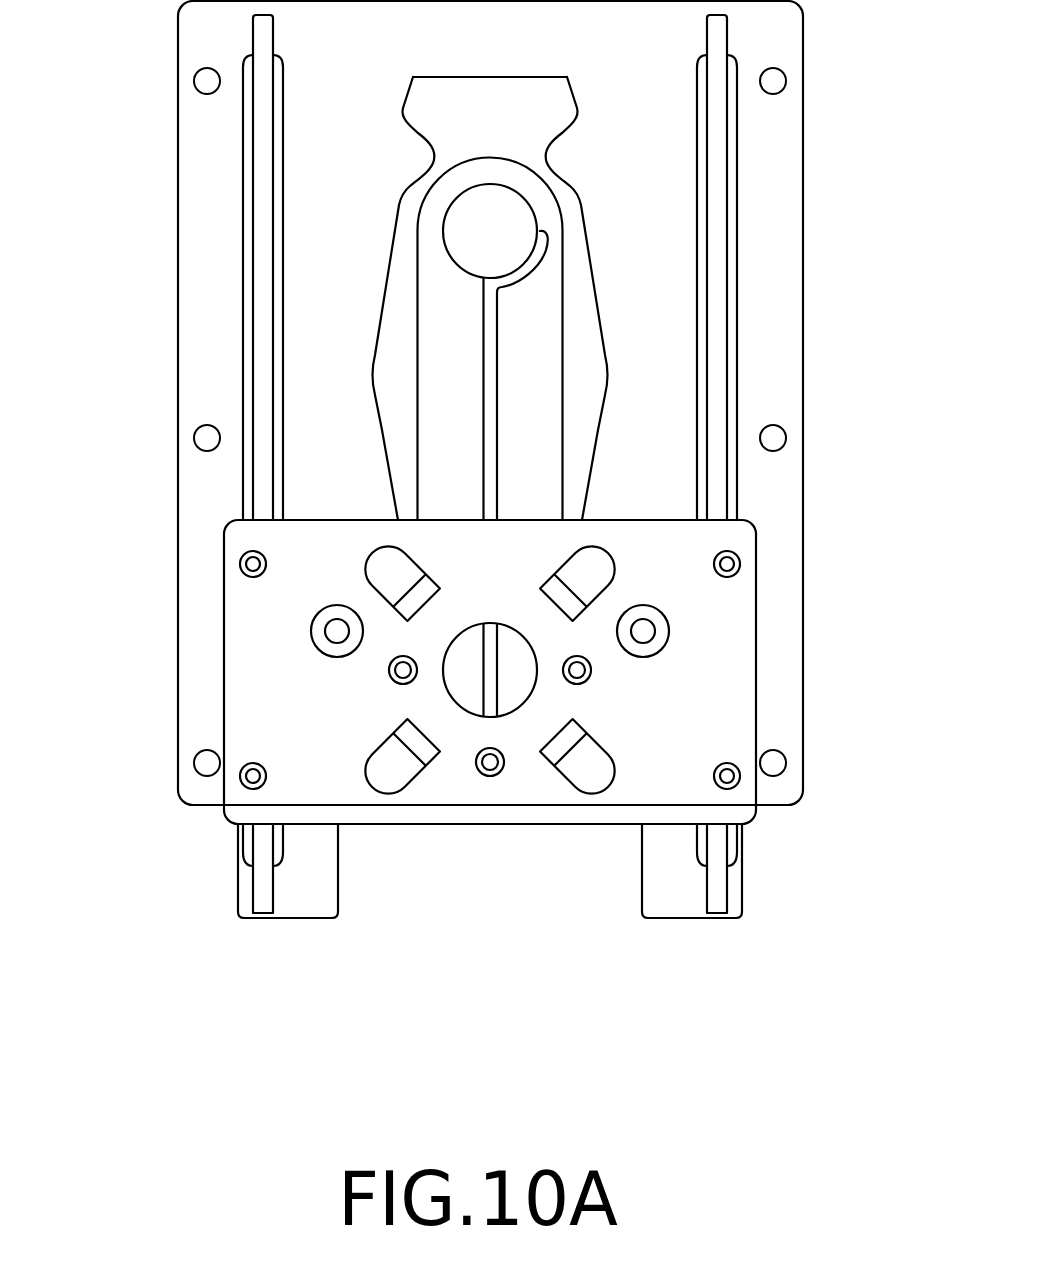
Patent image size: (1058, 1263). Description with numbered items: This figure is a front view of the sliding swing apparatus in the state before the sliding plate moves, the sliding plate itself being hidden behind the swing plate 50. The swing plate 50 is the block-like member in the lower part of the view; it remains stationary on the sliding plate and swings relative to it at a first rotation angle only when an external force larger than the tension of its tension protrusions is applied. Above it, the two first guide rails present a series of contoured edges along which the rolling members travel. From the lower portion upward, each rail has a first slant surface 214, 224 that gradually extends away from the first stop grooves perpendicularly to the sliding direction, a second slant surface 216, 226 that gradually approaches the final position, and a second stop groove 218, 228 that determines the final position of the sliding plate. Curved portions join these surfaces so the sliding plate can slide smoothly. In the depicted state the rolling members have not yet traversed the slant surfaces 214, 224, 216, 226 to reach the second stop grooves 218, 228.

The swing plate 50 is at (775, 620).
The first slant surface 214 is at (387, 460).
The second slant surface 216 is at (383, 312).
The second stop groove 218 is at (432, 156).
The first slant surface 224 is at (593, 460).
The second slant surface 226 is at (597, 312).
The second stop groove 228 is at (548, 156).